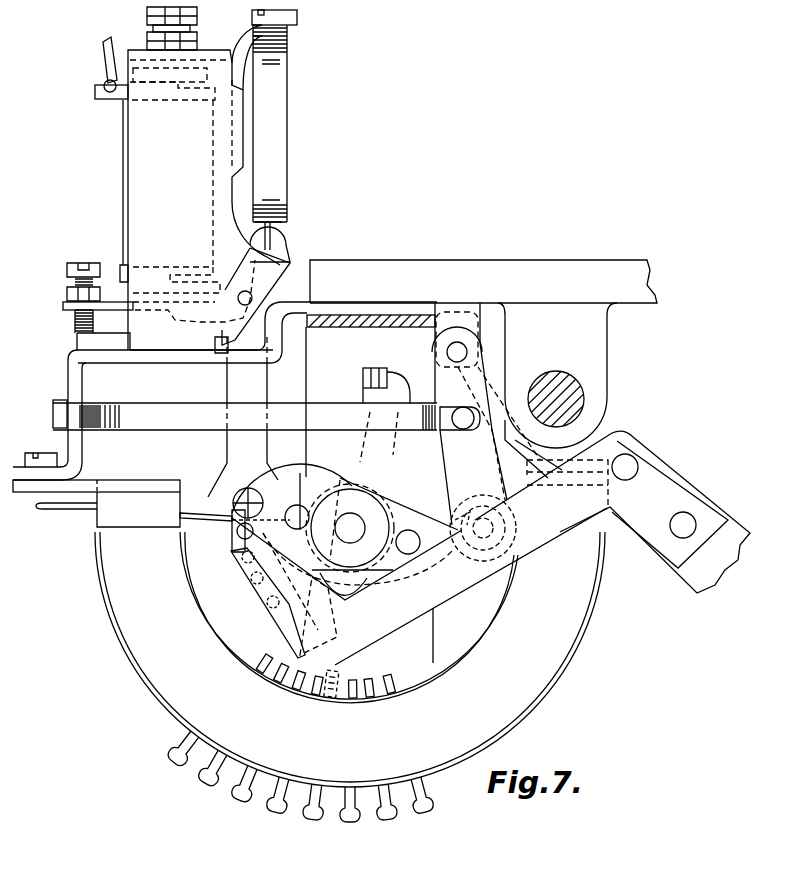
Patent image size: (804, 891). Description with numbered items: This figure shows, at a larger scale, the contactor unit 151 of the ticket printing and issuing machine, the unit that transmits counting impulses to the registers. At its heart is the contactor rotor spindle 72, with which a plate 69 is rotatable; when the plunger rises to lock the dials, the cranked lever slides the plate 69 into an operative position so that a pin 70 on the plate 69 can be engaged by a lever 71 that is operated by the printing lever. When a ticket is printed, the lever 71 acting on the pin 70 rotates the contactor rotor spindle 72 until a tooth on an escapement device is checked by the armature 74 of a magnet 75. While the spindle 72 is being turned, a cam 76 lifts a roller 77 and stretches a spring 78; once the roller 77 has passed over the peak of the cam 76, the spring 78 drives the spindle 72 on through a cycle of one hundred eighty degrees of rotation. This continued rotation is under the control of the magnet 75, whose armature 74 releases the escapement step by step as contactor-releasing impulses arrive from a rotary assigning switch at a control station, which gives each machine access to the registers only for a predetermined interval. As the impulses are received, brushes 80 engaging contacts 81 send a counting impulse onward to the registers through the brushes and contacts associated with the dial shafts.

The plate 69 is at (307, 490).
The pin 70 is at (240, 503).
The lever 71 is at (419, 571).
The contactor rotor spindle 72 is at (363, 528).
The armature 74 is at (243, 417).
The magnet 75 is at (196, 180).
The cam 76 is at (410, 490).
The roller 77 is at (470, 502).
The spring 78 is at (266, 415).
The brushes 80 is at (338, 695).
The contacts 81 is at (263, 652).
The contactor unit 151 is at (152, 707).